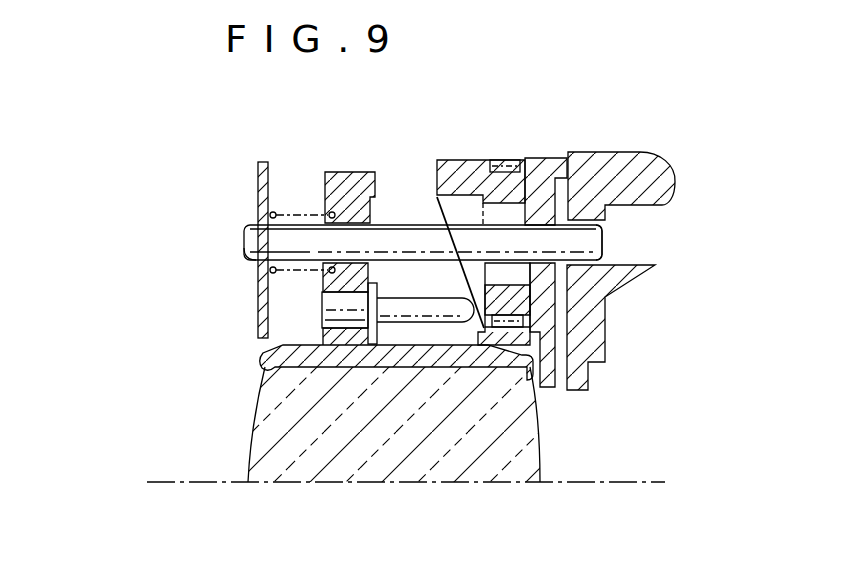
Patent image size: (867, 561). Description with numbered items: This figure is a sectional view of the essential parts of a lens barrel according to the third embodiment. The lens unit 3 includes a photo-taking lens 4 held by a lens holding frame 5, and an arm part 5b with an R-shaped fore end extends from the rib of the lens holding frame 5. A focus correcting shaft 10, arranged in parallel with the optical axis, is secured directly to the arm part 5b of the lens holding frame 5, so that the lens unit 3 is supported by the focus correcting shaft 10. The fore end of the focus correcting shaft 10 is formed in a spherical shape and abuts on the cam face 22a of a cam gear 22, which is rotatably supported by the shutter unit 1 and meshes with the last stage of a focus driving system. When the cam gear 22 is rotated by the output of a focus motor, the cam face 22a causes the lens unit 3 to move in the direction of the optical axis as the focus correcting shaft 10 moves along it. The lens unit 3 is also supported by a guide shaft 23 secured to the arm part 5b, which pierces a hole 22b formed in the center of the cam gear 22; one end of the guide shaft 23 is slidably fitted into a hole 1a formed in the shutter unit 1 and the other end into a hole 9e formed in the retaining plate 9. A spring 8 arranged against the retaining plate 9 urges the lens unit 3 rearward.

The shutter unit 1 is at (548, 172).
The hole 1a is at (607, 242).
The lens unit 3 is at (195, 410).
The photo-taking lens 4 is at (528, 430).
The lens holding frame 5 is at (268, 370).
The arm part 5b is at (350, 180).
The spring 8 is at (297, 212).
The retaining plate 9 is at (258, 188).
The hole 9e is at (250, 256).
The focus correcting shaft 10 is at (322, 310).
The cam gear 22 is at (457, 160).
The cam face 22a is at (444, 222).
The hole 22b is at (508, 200).
The guide shaft 23 is at (258, 243).